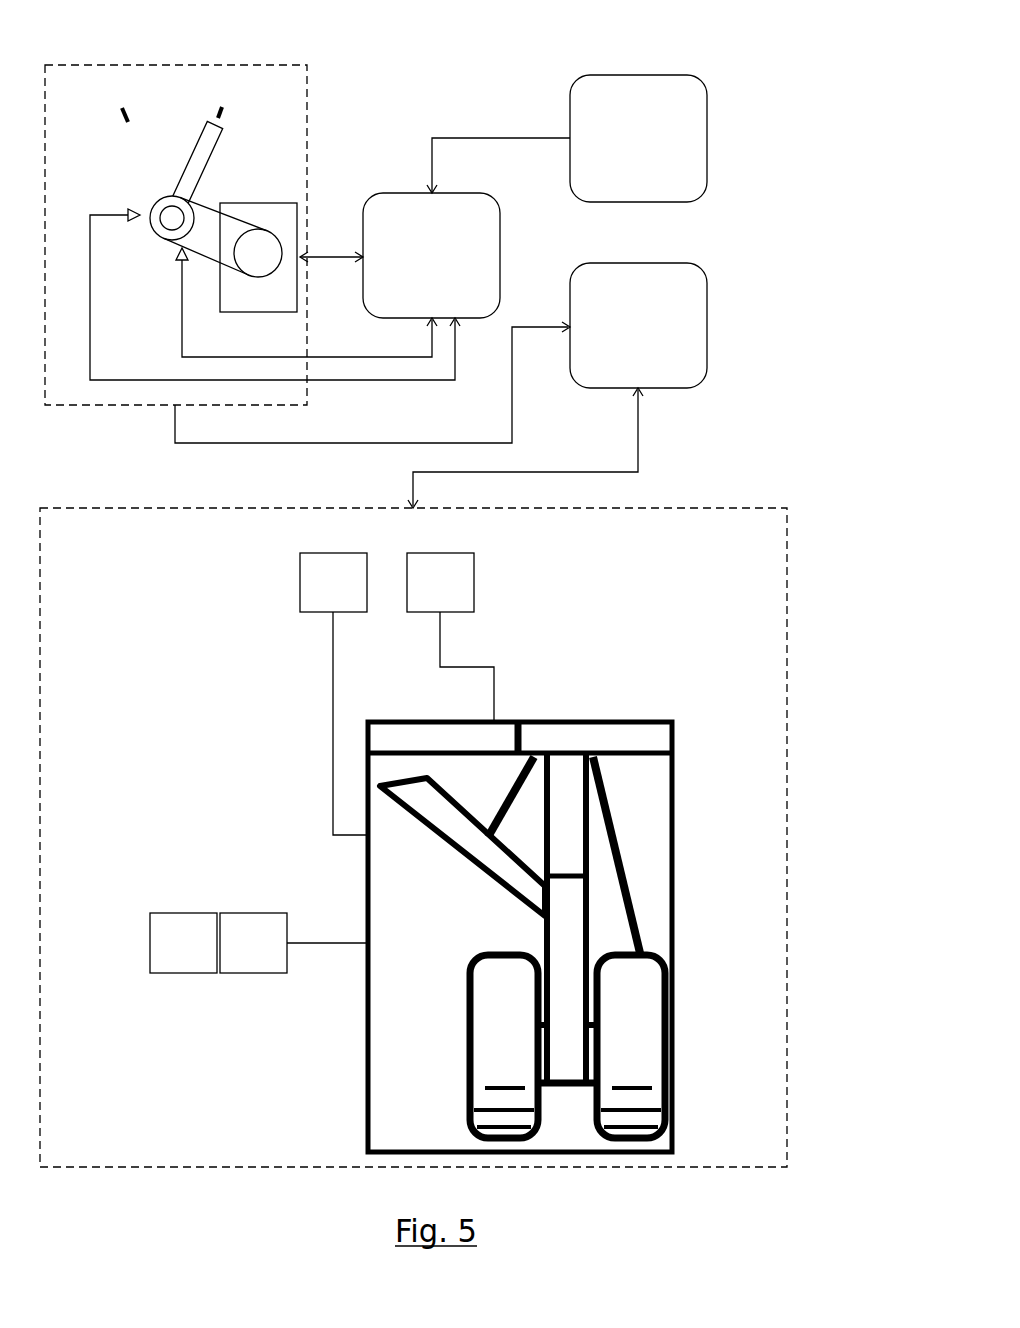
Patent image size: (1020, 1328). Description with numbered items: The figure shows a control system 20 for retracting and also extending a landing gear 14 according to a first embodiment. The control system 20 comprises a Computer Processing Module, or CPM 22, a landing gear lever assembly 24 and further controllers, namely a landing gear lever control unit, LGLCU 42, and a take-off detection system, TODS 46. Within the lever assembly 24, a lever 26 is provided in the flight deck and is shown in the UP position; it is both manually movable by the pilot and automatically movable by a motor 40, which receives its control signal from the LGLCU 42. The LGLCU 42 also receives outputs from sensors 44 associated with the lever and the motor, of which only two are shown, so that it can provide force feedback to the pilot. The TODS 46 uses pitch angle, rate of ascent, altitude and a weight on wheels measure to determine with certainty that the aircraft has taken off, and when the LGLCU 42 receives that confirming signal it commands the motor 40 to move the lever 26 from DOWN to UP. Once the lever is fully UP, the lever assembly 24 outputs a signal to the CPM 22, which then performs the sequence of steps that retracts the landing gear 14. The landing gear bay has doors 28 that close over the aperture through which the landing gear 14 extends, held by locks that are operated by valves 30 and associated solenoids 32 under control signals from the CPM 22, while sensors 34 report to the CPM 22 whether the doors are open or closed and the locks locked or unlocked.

The landing gear 14 is at (643, 1005).
The control system 20 is at (812, 485).
The Computer Processing Module (CPM) 22 is at (630, 386).
The landing gear lever assembly 24 is at (173, 62).
The landing gear lever 26 is at (165, 236).
The doors 28 is at (503, 728).
The valves 30 is at (240, 959).
The solenoids 32 is at (170, 959).
The sensors 34 is at (320, 597).
The motor 40 is at (272, 217).
The landing gear lever control unit (LGLCU) 42 is at (402, 200).
The sensors 44 is at (128, 212).
The take-off detection system (TODS) 46 is at (628, 196).